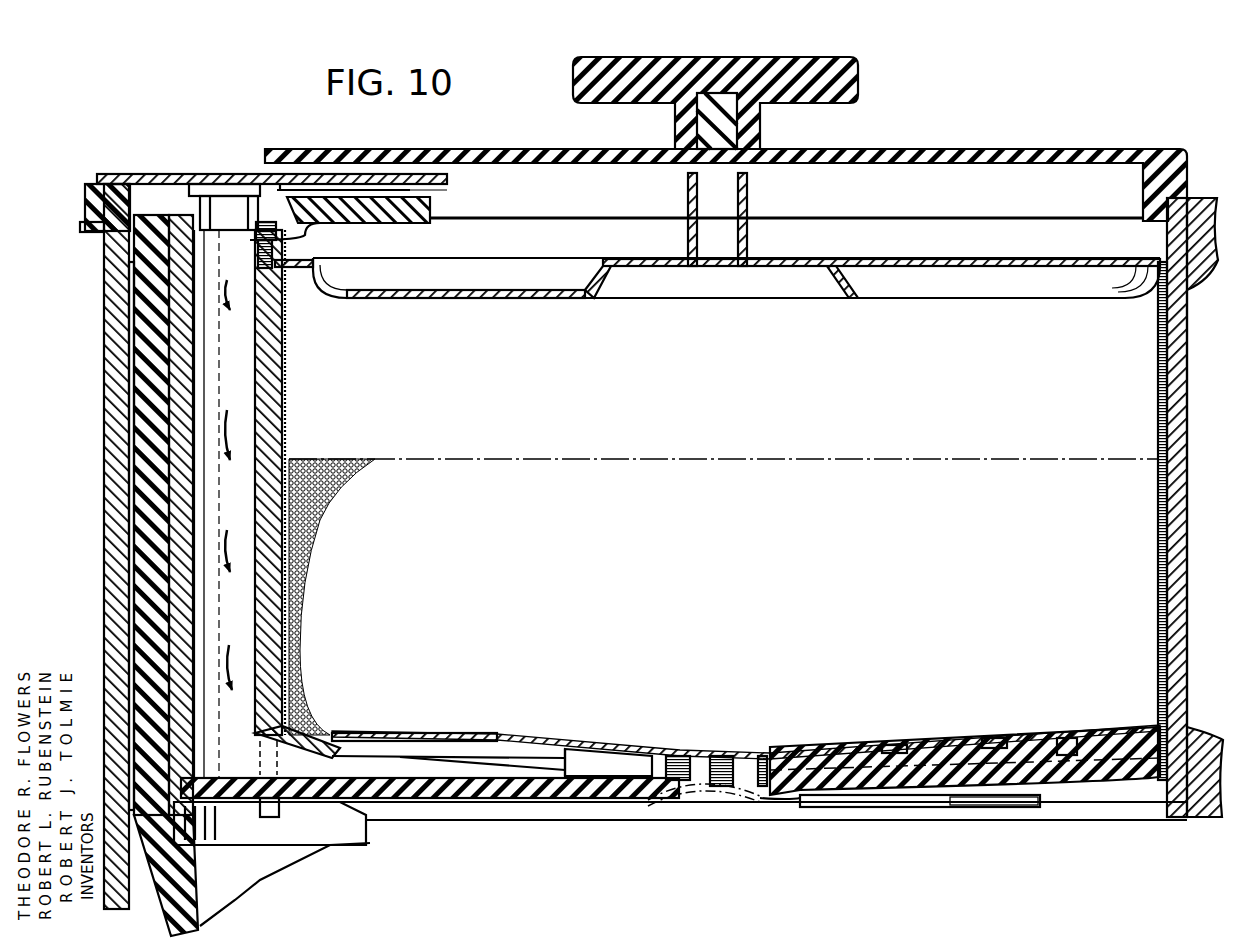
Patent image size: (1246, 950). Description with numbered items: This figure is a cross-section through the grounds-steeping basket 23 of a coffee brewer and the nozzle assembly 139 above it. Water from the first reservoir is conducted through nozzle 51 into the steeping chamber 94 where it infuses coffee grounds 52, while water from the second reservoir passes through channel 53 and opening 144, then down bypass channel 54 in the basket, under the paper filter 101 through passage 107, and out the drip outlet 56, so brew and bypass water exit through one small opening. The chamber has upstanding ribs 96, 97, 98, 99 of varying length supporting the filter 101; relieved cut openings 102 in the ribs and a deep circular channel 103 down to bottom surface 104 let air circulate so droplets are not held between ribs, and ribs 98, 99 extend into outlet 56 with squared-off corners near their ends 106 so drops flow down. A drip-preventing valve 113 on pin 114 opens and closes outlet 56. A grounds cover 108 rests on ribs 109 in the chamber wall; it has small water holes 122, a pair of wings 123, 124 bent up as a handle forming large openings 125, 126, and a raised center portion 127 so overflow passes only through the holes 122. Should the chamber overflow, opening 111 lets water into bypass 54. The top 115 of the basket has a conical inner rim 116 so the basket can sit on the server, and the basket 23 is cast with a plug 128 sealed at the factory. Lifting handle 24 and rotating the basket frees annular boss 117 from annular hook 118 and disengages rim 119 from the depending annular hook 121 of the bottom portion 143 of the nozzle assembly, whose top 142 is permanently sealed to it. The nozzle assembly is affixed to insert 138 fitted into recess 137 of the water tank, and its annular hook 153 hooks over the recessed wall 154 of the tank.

The grounds-steeping basket 23 is at (1190, 508).
The handle 24 is at (1197, 283).
The nozzle 51 is at (303, 188).
The coffee grounds 52 is at (335, 500).
The channel 53 is at (216, 191).
The bypass channel 54 is at (248, 392).
The drip outlet 56 is at (700, 803).
The steeping chamber 94 is at (730, 407).
The upstanding rib 96 is at (497, 750).
The upstanding rib 97 is at (605, 752).
The upstanding rib 98 is at (700, 753).
The upstanding rib 99 is at (800, 745).
The paper filter 101 is at (415, 733).
The relieved cut openings 102 is at (985, 740).
The deep circular channel 103 is at (1065, 738).
The bottom surface 104 is at (1030, 750).
The ends of ribs 106 is at (740, 752).
The passage 107 is at (317, 769).
The grounds cover 108 is at (463, 300).
The ribs 109 is at (284, 366).
The opening 111 is at (290, 252).
The drip-preventing valve 113 is at (735, 805).
The pin 114 is at (800, 808).
The top 115 is at (965, 150).
The conical inner rim 116 is at (1143, 222).
The annular boss 117 is at (278, 810).
The annular hook 118 is at (366, 836).
The rim 119 is at (273, 228).
The depending annular hook 121 is at (258, 250).
The water holes 122 is at (370, 300).
The wing 123 is at (687, 182).
The wing 124 is at (748, 182).
The opening 125 is at (640, 240).
The opening 126 is at (835, 262).
The center portion 127 is at (722, 275).
The plug 128 is at (440, 800).
The recess 137 is at (132, 320).
The insert 138 is at (150, 380).
The nozzle assembly 139 is at (458, 193).
The top 142 is at (120, 175).
The bottom portion 143 is at (95, 200).
The opening 144 is at (219, 191).
The annular hook 153 is at (85, 230).
The recessed wall 154 is at (104, 272).